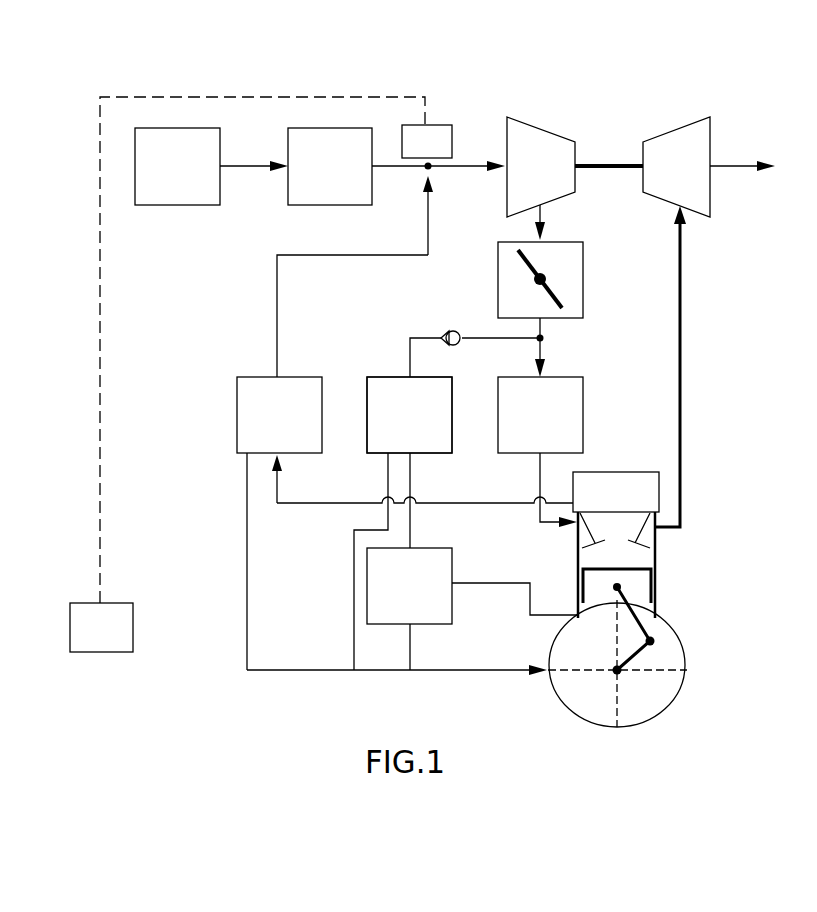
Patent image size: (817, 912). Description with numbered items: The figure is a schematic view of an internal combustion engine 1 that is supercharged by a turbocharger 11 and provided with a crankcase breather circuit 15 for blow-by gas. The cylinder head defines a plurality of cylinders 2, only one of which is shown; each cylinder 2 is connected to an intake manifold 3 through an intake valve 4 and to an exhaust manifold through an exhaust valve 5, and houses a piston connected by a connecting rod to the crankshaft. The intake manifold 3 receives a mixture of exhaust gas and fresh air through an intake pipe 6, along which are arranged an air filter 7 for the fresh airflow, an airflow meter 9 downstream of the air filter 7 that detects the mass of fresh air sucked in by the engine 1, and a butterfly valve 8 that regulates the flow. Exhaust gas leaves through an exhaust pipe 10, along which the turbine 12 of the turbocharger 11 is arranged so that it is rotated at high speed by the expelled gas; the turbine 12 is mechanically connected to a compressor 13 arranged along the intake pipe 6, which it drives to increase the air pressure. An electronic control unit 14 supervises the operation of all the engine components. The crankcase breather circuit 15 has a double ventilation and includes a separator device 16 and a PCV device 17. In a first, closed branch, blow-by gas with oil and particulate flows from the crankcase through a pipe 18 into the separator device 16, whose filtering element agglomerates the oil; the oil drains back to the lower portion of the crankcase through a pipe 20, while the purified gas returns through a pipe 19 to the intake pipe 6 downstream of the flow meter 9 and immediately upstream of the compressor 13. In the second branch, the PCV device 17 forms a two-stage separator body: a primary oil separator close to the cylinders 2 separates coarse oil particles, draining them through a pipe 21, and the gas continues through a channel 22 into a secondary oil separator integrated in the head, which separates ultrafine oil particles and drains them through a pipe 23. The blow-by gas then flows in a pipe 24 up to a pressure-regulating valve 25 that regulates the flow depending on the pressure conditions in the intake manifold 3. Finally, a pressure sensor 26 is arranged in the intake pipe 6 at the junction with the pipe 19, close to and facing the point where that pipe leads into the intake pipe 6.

The internal combustion engine 1 is at (340, 80).
The cylinder 2 is at (715, 664).
The intake manifold 3 is at (540, 422).
The intake valve 4 is at (577, 531).
The exhaust valve 5 is at (657, 531).
The intake pipe 6 is at (465, 163).
The air filter 7 is at (211, 166).
The butterfly valve 8 is at (580, 271).
The airflow meter 9 is at (330, 166).
The exhaust pipe 10 is at (683, 298).
The turbocharger 11 is at (625, 136).
The turbine 12 is at (709, 167).
The compressor 13 is at (541, 178).
The electronic control unit 14 is at (101, 627).
The crankcase breather circuit 15 is at (314, 704).
The separator device 16 is at (279, 415).
The PCV device 17 is at (381, 347).
The pipe 18 is at (298, 504).
The pipe 19 is at (311, 254).
The pipe 20 is at (461, 671).
The pipe 21 is at (412, 640).
The channel 22 is at (412, 518).
The pipe 23 is at (353, 646).
The pipe 24 is at (481, 337).
The pressure-regulating valve 25 is at (458, 346).
The pressure sensor 26 is at (427, 141).